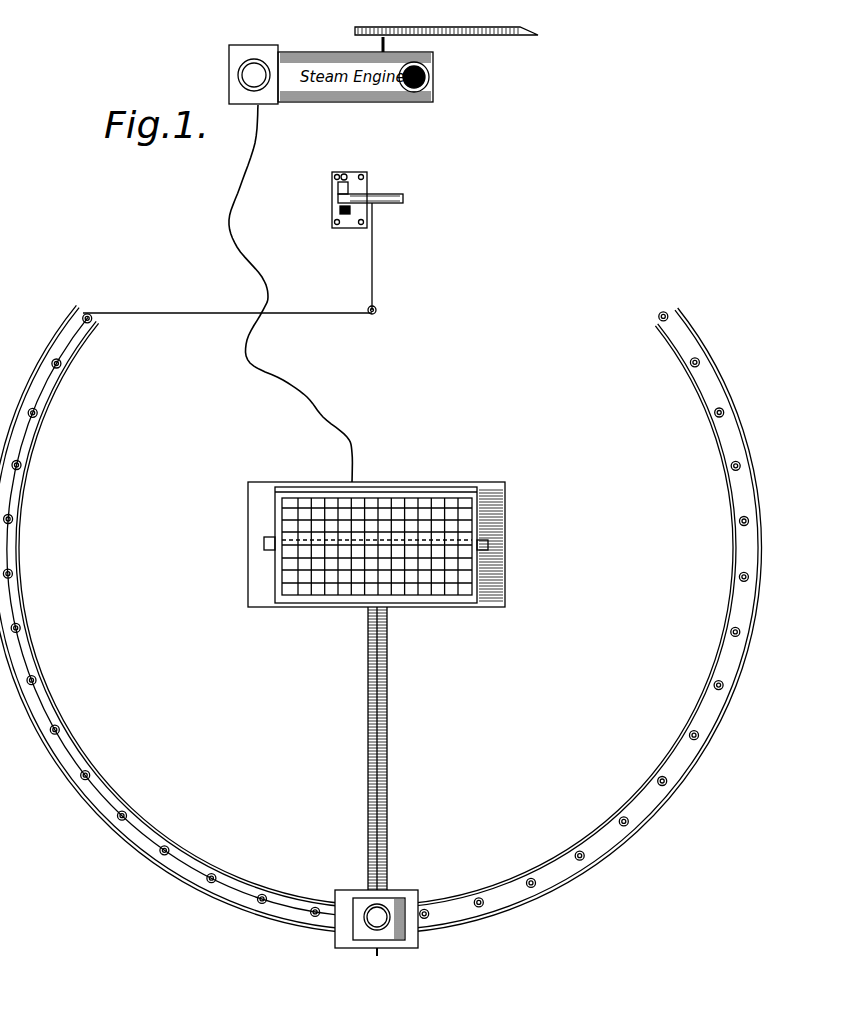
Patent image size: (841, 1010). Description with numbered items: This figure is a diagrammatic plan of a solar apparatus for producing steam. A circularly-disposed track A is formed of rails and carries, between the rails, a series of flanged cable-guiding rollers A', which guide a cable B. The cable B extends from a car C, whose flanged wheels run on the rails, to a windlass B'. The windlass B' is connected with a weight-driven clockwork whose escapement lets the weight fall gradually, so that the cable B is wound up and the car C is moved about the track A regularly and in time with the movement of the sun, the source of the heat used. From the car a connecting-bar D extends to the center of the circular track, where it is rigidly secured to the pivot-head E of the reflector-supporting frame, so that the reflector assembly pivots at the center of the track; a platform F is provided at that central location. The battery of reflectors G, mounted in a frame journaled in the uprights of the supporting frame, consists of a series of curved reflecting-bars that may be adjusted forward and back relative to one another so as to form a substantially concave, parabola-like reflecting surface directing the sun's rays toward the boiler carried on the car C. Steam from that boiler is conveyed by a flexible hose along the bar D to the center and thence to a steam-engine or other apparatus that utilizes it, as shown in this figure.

The circularly-disposed track A is at (381, 619).
The cable-guiding rollers A' is at (375, 615).
The cable B is at (191, 510).
The windlass B' is at (373, 195).
The car C is at (352, 888).
The connecting-bar D is at (388, 758).
The pivot-head E is at (488, 537).
The platform F is at (386, 529).
The battery of reflectors G is at (473, 507).